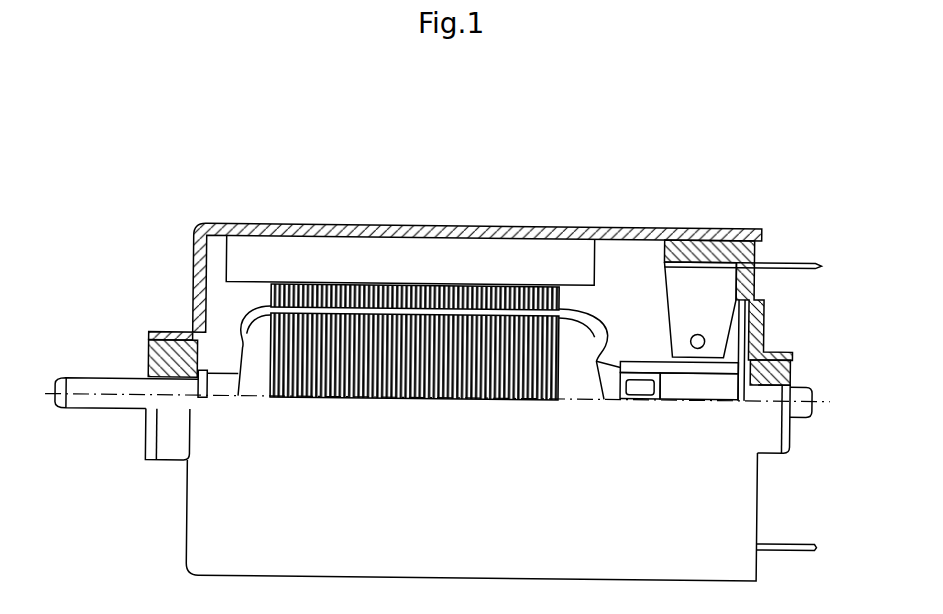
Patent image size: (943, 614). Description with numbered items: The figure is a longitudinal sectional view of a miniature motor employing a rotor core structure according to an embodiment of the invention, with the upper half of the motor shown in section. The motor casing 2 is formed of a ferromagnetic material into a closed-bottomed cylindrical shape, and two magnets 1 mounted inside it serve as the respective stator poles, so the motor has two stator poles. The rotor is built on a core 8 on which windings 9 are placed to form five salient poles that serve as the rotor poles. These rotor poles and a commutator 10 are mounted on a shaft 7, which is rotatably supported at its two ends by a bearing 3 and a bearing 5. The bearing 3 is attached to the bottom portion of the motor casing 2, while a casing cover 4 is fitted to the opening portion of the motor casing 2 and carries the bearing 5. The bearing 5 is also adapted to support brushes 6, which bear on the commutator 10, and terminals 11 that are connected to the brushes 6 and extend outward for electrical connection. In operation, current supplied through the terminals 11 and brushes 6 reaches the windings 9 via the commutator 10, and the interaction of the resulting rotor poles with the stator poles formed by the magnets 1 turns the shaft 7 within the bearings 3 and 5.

The magnet 1 is at (503, 256).
The motor casing 2 is at (369, 226).
The bearing 3 is at (166, 343).
The casing cover 4 is at (760, 322).
The bearing 5 is at (790, 362).
The brush 6 is at (715, 299).
The shaft 7 is at (115, 406).
The core 8 is at (377, 387).
The winding 9 is at (582, 388).
The commutator 10 is at (698, 388).
The terminal 11 is at (775, 259).